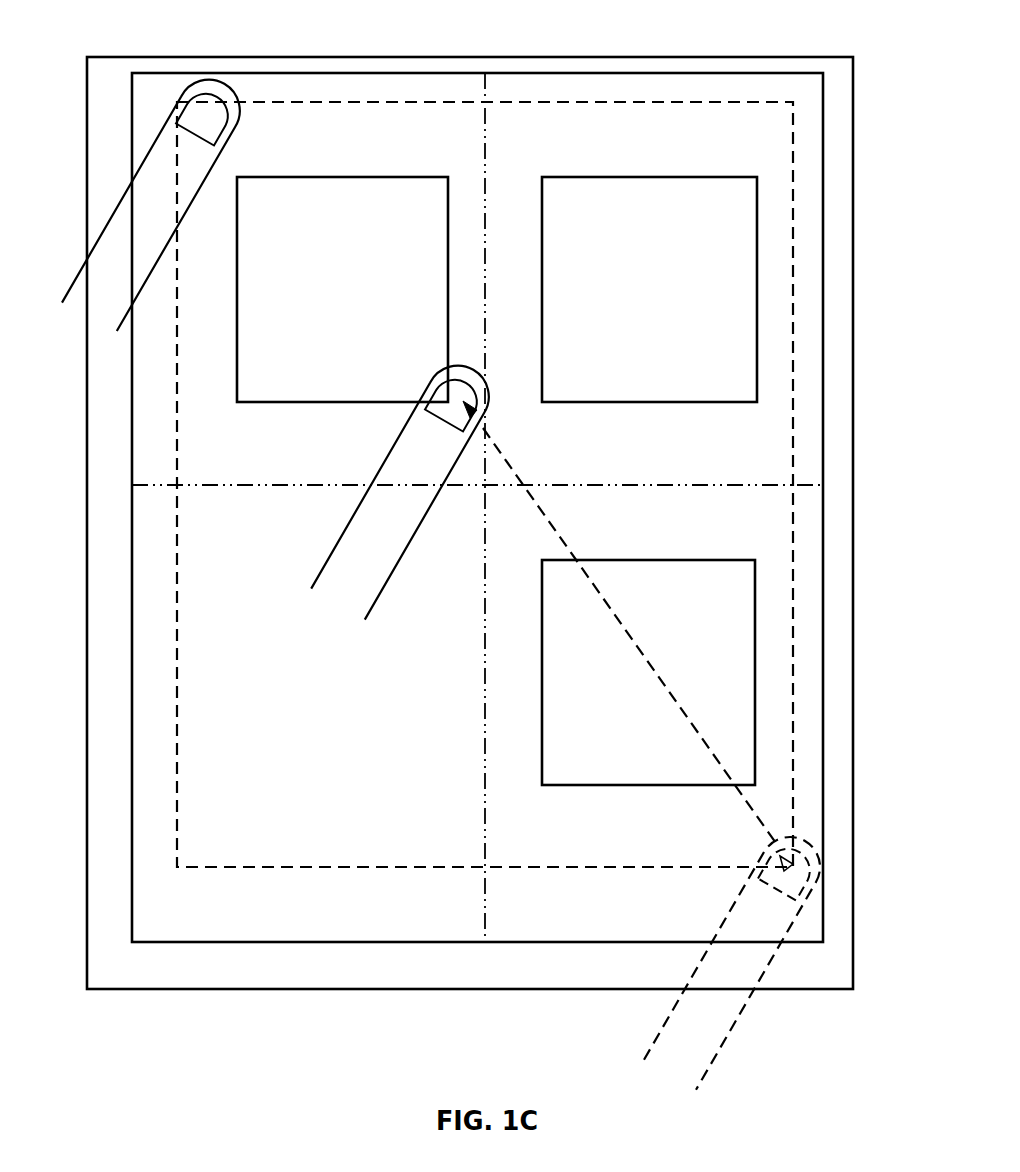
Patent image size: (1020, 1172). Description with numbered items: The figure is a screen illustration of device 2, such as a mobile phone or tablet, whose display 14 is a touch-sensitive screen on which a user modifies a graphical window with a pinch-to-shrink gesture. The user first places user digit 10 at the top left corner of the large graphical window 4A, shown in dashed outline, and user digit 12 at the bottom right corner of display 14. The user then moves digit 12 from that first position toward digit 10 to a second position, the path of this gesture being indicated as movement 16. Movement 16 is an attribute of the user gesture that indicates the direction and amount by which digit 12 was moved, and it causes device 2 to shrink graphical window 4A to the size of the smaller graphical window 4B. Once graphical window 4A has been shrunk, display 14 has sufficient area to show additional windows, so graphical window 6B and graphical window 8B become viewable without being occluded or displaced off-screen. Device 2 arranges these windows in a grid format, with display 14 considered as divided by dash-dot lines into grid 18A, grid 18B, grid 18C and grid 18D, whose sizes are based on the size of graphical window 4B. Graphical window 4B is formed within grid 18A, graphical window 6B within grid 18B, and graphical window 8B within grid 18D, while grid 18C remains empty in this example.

The device 2 is at (476, 57).
The display 14 is at (824, 138).
The graphical window 4A is at (688, 100).
The graphical window 4B is at (342, 289).
The graphical window 6B is at (649, 289).
The graphical window 8B is at (648, 672).
The user digit 10 is at (203, 88).
The user digit 12 is at (455, 368).
The movement 16 is at (503, 462).
The grid 18A is at (331, 293).
The grid 18B is at (639, 293).
The grid 18C is at (331, 676).
The grid 18D is at (639, 676).